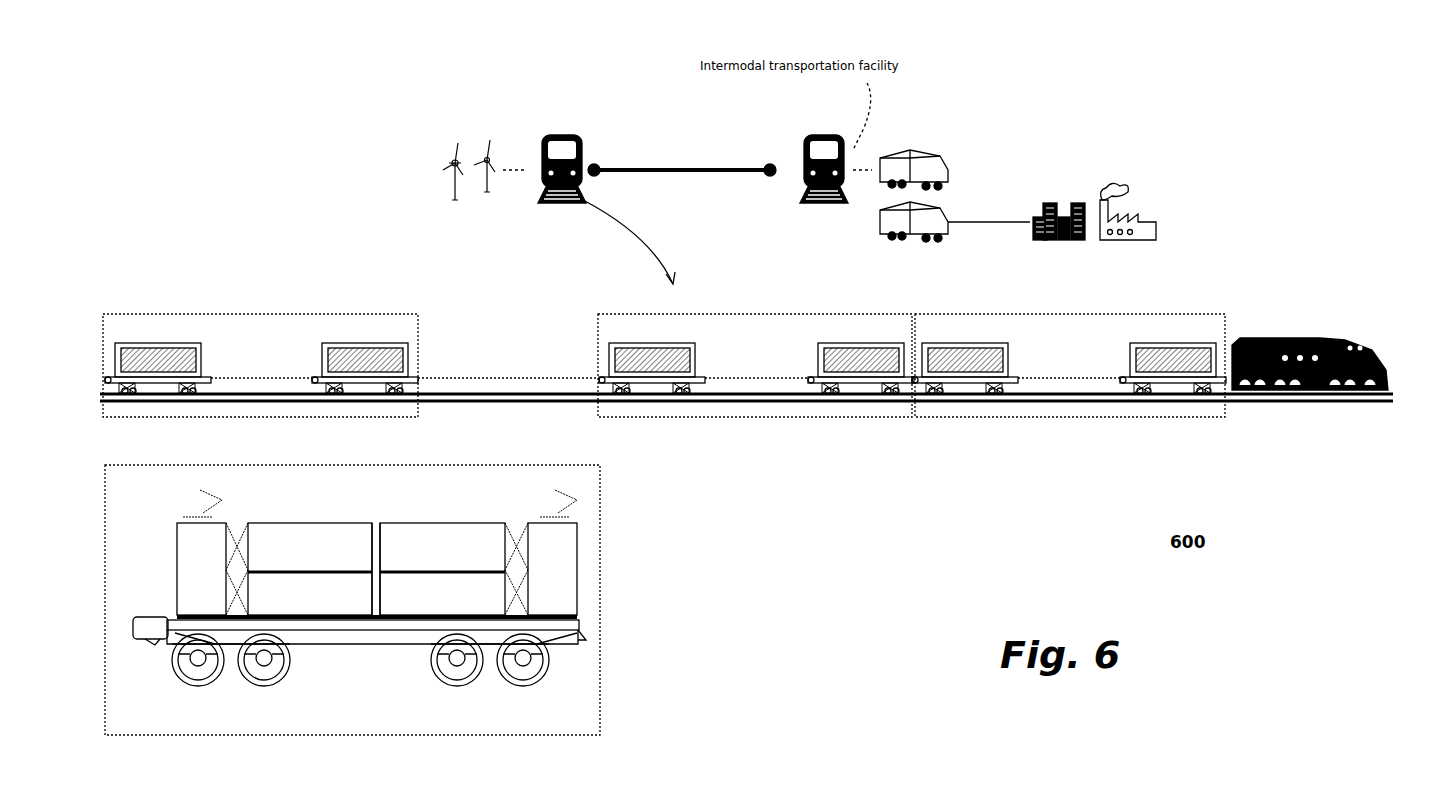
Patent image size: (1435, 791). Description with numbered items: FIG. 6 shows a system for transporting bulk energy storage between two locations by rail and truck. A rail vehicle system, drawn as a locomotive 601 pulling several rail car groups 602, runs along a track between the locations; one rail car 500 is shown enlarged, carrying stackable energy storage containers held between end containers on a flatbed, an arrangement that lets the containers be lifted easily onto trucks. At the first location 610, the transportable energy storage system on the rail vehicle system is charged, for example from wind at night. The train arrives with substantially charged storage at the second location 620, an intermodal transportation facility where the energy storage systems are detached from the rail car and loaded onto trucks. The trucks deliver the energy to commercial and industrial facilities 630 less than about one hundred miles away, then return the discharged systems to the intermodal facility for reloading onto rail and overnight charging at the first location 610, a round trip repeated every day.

The rail car 500 is at (392, 388).
The locomotive 601 is at (1408, 405).
The rail car group 602 is at (1158, 427).
The first location 610 is at (514, 198).
The second location 620 is at (870, 210).
The commercial and industrial facilities 630 is at (1094, 238).